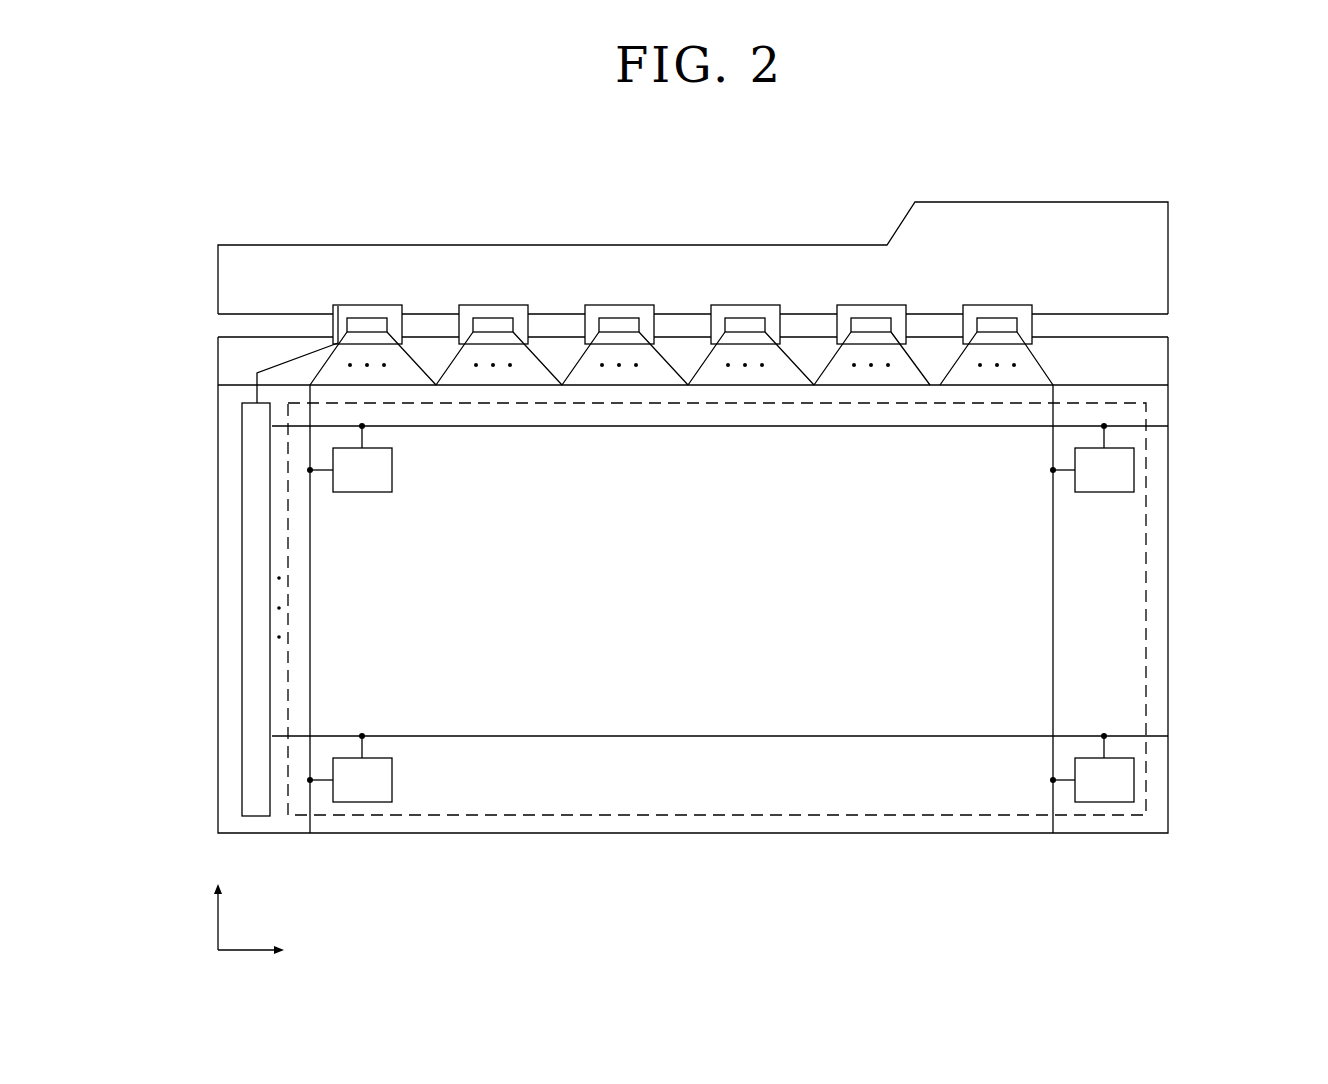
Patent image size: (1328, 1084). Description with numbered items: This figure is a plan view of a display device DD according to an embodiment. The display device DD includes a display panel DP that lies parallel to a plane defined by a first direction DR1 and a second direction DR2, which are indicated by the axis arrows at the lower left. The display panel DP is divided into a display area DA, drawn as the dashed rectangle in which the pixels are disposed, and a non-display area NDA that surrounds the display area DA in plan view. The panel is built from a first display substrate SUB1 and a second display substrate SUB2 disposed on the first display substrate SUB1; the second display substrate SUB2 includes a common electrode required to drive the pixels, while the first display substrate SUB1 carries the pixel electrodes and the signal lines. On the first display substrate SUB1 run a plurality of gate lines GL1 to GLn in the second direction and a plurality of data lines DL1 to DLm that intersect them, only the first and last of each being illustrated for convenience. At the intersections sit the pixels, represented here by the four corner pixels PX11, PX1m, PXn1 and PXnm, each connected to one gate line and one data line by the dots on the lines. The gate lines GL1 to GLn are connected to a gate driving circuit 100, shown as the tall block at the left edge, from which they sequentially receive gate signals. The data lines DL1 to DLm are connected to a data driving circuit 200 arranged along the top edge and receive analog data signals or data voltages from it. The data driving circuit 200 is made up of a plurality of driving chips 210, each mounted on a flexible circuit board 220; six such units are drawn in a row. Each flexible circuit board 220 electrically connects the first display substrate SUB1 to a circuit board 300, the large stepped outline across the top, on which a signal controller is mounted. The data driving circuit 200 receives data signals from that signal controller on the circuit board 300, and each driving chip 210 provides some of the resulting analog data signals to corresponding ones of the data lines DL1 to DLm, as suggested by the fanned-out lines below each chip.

The gate driving circuit 100 is at (242, 608).
The data driving circuit 200 is at (681, 264).
The driving chip 210 is at (375, 318).
The flexible circuit board 220 is at (353, 305).
The circuit board 300 is at (628, 244).
The display device DD is at (1013, 163).
The display panel DP is at (772, 585).
The first display substrate SUB1 is at (1168, 345).
The second display substrate SUB2 is at (1152, 385).
The display area DA is at (1146, 556).
The non-display area NDA is at (1158, 636).
The gate line GL1 is at (720, 427).
The gate line GLn is at (720, 735).
The data line DL1 is at (311, 610).
The data line DLm is at (1053, 608).
The pixel PX11 is at (349, 457).
The pixel PX1m is at (1092, 457).
The pixel PXn1 is at (349, 767).
The pixel PXnm is at (1092, 767).
The first direction DR1 is at (221, 904).
The second direction DR2 is at (276, 950).